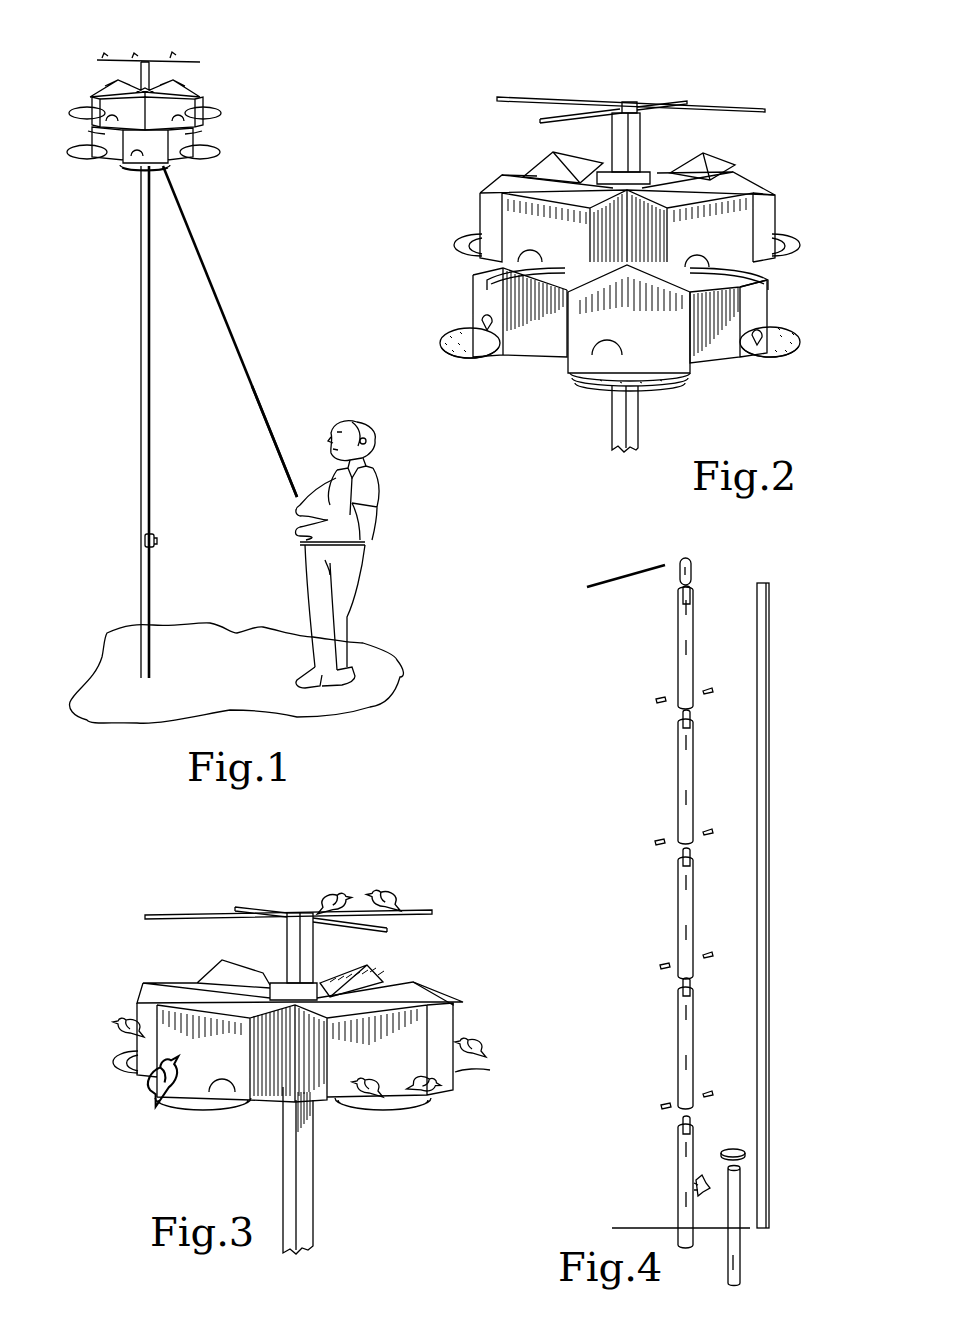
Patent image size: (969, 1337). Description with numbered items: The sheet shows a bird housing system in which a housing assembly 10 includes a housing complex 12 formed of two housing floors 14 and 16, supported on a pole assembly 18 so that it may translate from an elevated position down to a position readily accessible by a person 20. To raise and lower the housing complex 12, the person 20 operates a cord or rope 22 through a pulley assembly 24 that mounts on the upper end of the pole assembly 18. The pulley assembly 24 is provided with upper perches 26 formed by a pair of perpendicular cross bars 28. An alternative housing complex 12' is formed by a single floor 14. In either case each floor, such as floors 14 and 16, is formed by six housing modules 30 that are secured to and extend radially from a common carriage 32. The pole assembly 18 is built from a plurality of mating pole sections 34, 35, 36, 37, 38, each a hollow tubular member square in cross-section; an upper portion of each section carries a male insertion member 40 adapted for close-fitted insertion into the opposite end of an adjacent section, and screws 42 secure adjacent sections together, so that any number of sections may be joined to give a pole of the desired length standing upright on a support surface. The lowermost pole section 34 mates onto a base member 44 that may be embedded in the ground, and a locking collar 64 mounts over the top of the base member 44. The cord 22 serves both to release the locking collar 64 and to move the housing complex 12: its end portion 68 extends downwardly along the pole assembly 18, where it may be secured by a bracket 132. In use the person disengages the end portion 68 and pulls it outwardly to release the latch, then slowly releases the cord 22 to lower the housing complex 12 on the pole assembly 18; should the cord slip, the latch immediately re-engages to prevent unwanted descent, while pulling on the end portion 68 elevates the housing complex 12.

In FIG. 1, the housing assembly 10 is at (215, 185).
In FIG. 1, the housing complex 12 is at (198, 108).
In FIG. 2, the housing complex 12 is at (635, 236).
In FIG. 3, the housing complex 12' is at (285, 1043).
In FIG. 1, the housing floor 14 is at (92, 127).
In FIG. 2, the housing floor 14 is at (468, 310).
In FIG. 3, the housing floor 14 is at (436, 984).
In FIG. 1, the housing floor 16 is at (92, 97).
In FIG. 2, the housing floor 16 is at (475, 177).
In FIG. 1, the pole assembly 18 is at (128, 378).
In FIG. 2, the pole assembly 18 is at (640, 428).
In FIG. 3, the pole assembly 18 is at (305, 1165).
In FIG. 4, the pole assembly 18 is at (655, 838).
In FIG. 1, the person 20 is at (383, 482).
In FIG. 1, the cord or rope 22 is at (215, 288).
In FIG. 4, the cord or rope 22 is at (772, 748).
In FIG. 1, the pulley assembly 24 is at (150, 52).
In FIG. 2, the pulley assembly 24 is at (610, 138).
In FIG. 3, the pulley assembly 24 is at (300, 945).
In FIG. 2, the upper perches 26 is at (688, 83).
In FIG. 3, the upper perches 26 is at (220, 895).
In FIG. 2, the cross bars 28 is at (525, 98).
In FIG. 3, the cross bars 28 is at (193, 912).
In FIG. 4, the cross bars 28 is at (625, 580).
In FIG. 2, the housing modules 30 is at (520, 240).
In FIG. 3, the housing modules 30 is at (262, 1087).
In FIG. 2, the common carriage 32 is at (643, 165).
In FIG. 3, the common carriage 32 is at (320, 973).
In FIG. 4, the pole section 34 is at (684, 1180).
In FIG. 4, the pole section 35 is at (686, 1062).
In FIG. 4, the pole section 36 is at (684, 919).
In FIG. 4, the pole section 37 is at (686, 771).
In FIG. 4, the pole section 38 is at (649, 633).
In FIG. 4, the male insertion member 40 is at (693, 600).
In FIG. 4, the screws 42 is at (703, 690).
In FIG. 4, the base member 44 is at (740, 1246).
In FIG. 4, the locking collar 64 is at (742, 1152).
In FIG. 1, the end portion 68 is at (266, 414).
In FIG. 1, the bracket 132 is at (158, 541).